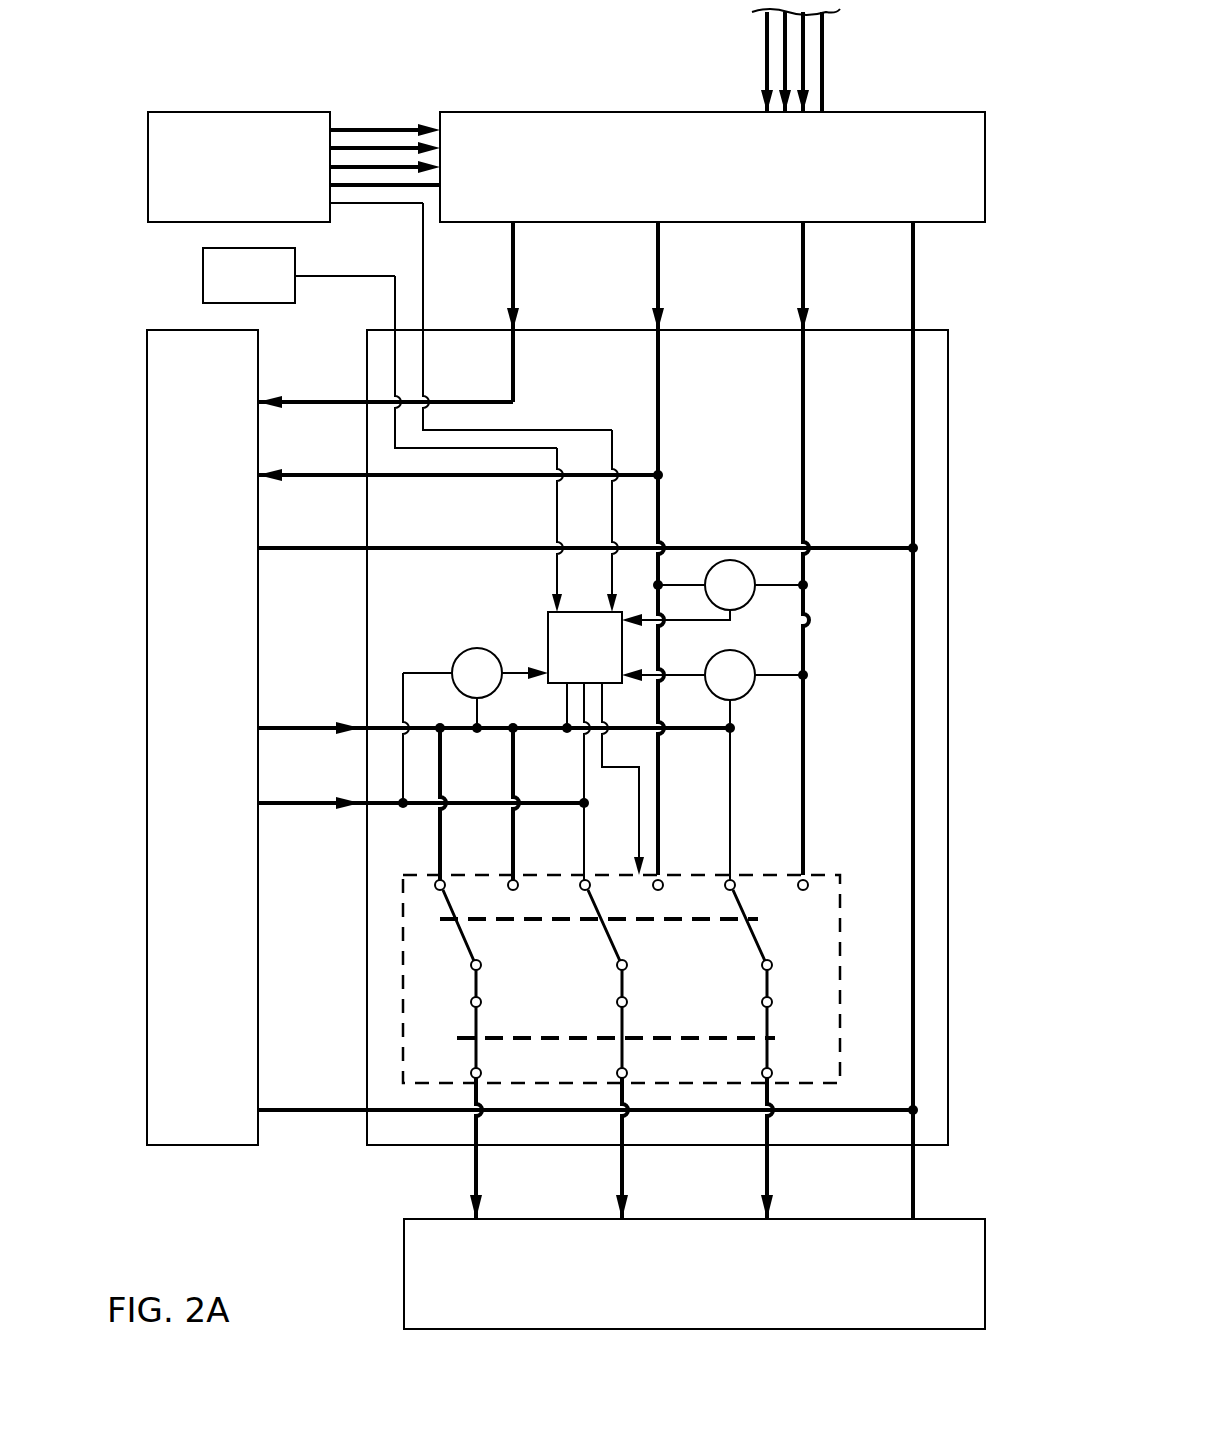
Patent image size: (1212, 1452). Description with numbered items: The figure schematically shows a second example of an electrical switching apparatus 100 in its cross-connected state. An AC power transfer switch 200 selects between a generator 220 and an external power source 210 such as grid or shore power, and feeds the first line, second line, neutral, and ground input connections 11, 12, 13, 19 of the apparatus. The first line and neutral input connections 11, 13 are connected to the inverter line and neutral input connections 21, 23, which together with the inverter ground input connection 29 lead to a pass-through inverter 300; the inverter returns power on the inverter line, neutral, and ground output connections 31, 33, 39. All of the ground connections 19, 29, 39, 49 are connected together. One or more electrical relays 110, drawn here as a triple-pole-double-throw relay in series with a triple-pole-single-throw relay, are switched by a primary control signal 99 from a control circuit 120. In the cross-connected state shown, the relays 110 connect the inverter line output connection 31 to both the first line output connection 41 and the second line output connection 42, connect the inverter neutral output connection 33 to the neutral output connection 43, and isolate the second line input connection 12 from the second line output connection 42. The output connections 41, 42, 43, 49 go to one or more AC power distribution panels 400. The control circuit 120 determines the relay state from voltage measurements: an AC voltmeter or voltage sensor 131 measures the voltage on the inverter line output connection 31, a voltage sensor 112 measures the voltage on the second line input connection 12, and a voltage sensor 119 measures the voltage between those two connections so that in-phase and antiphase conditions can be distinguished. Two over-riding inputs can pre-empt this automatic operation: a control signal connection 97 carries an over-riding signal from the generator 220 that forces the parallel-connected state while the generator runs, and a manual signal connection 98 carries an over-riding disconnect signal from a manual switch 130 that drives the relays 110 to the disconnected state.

The external power source 210 is at (838, 60).
The generator 220 is at (294, 167).
The AC power transfer switch 200 is at (712, 167).
The manual switch 130 is at (249, 275).
The first line input connection 11 is at (510, 247).
The neutral input connection 13 is at (655, 246).
The second line input connection 12 is at (800, 245).
The ground input connection 19 is at (914, 303).
The inverter line input connection 21 is at (322, 400).
The inverter neutral input connection 23 is at (330, 480).
The inverter ground input connection 29 is at (308, 552).
The inverter line output connection 31 is at (306, 725).
The inverter neutral output connection 33 is at (292, 805).
The inverter ground output connection 39 is at (296, 1113).
The control signal connection 97 is at (562, 428).
The manual signal connection 98 is at (555, 497).
The primary control signal 99 is at (638, 783).
The electrical switching apparatus 100 is at (940, 465).
The electrical relays 110 is at (826, 870).
The AC voltmeter or voltage sensor 112 is at (752, 598).
The AC voltmeter or voltage sensor 119 is at (748, 698).
The control circuit 120 is at (585, 748).
The AC voltmeter or voltage sensor 131 is at (452, 655).
The inverter 300 is at (202, 737).
The AC power distribution panel 400 is at (694, 1274).
The first line output connection 41 is at (475, 1161).
The neutral output connection 43 is at (620, 1161).
The second line output connection 42 is at (767, 1162).
The ground output connection 49 is at (911, 1168).